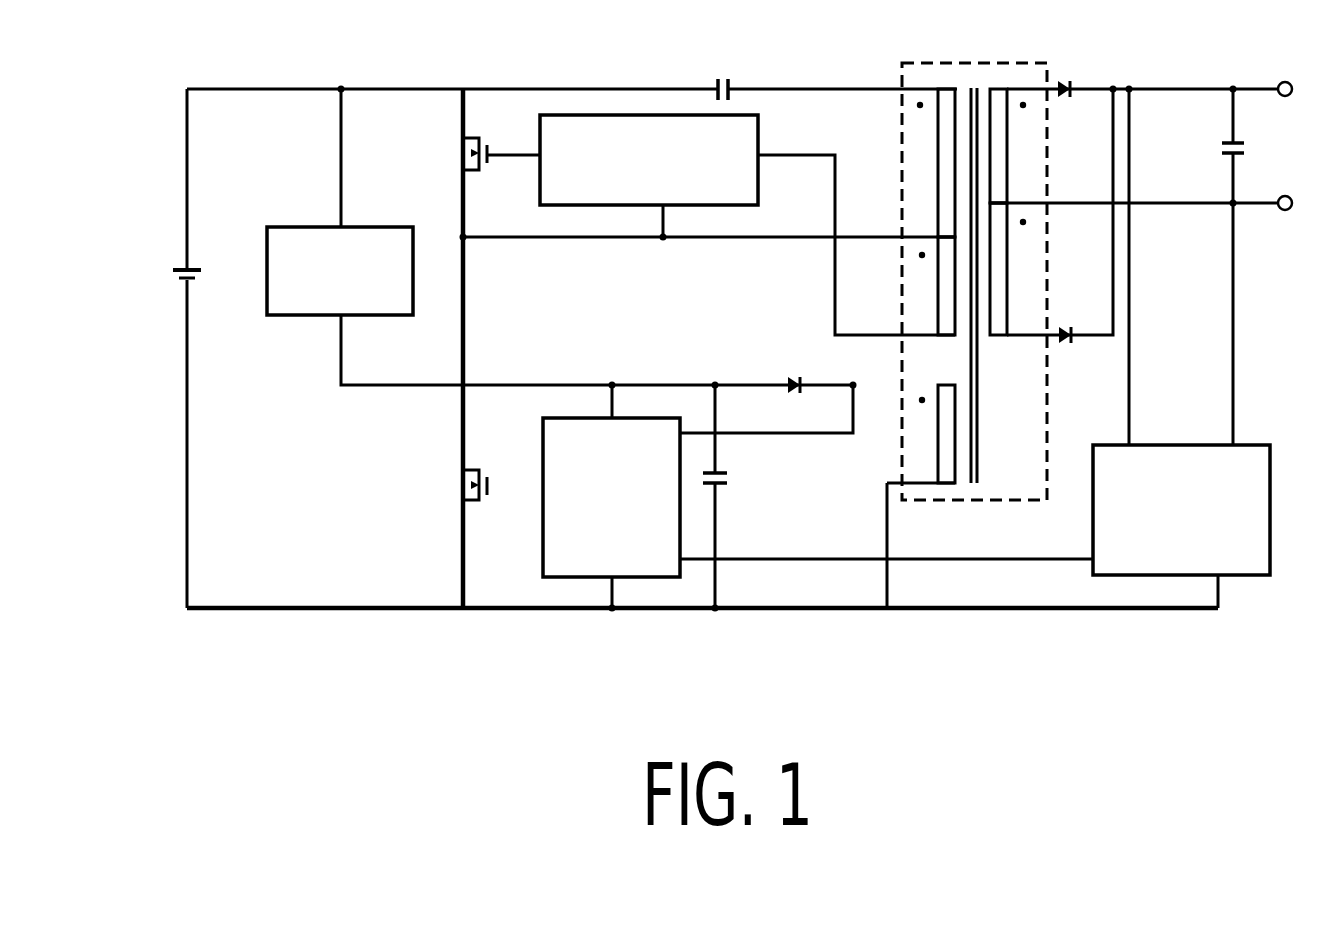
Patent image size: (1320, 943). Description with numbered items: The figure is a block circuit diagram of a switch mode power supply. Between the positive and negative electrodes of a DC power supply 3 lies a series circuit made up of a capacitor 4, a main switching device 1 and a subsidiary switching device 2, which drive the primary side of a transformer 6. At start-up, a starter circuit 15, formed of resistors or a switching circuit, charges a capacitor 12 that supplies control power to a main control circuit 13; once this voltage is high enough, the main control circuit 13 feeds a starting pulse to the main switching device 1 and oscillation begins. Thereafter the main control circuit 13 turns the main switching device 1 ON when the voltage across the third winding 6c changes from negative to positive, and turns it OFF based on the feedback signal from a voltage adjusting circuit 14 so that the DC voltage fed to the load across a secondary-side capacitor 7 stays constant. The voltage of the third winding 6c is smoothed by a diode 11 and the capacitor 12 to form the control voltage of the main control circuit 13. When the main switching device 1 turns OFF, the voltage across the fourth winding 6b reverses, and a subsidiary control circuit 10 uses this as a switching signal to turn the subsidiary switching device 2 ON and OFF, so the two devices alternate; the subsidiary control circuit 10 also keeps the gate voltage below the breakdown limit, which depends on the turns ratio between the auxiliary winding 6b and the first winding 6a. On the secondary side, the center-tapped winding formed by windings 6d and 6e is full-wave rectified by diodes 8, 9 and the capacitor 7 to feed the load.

The main switching device 1 is at (470, 485).
The subsidiary switching device 2 is at (470, 153).
The DC power supply 3 is at (185, 271).
The capacitor 4 is at (730, 84).
The transformer 6 is at (985, 62).
The first winding 6a is at (938, 197).
The fourth winding 6b is at (938, 310).
The third winding 6c is at (938, 468).
The secondary winding 6d is at (1010, 148).
The secondary winding 6e is at (1010, 253).
The secondary-side capacitor 7 is at (1245, 149).
The diode 8 is at (1066, 343).
The diode 9 is at (1072, 84).
The subsidiary control circuit 10 is at (760, 165).
The diode 11 is at (791, 381).
The capacitor 12 is at (728, 478).
The main control circuit 13 is at (657, 578).
The voltage adjusting circuit 14 is at (1240, 576).
The starter circuit 15 is at (267, 245).